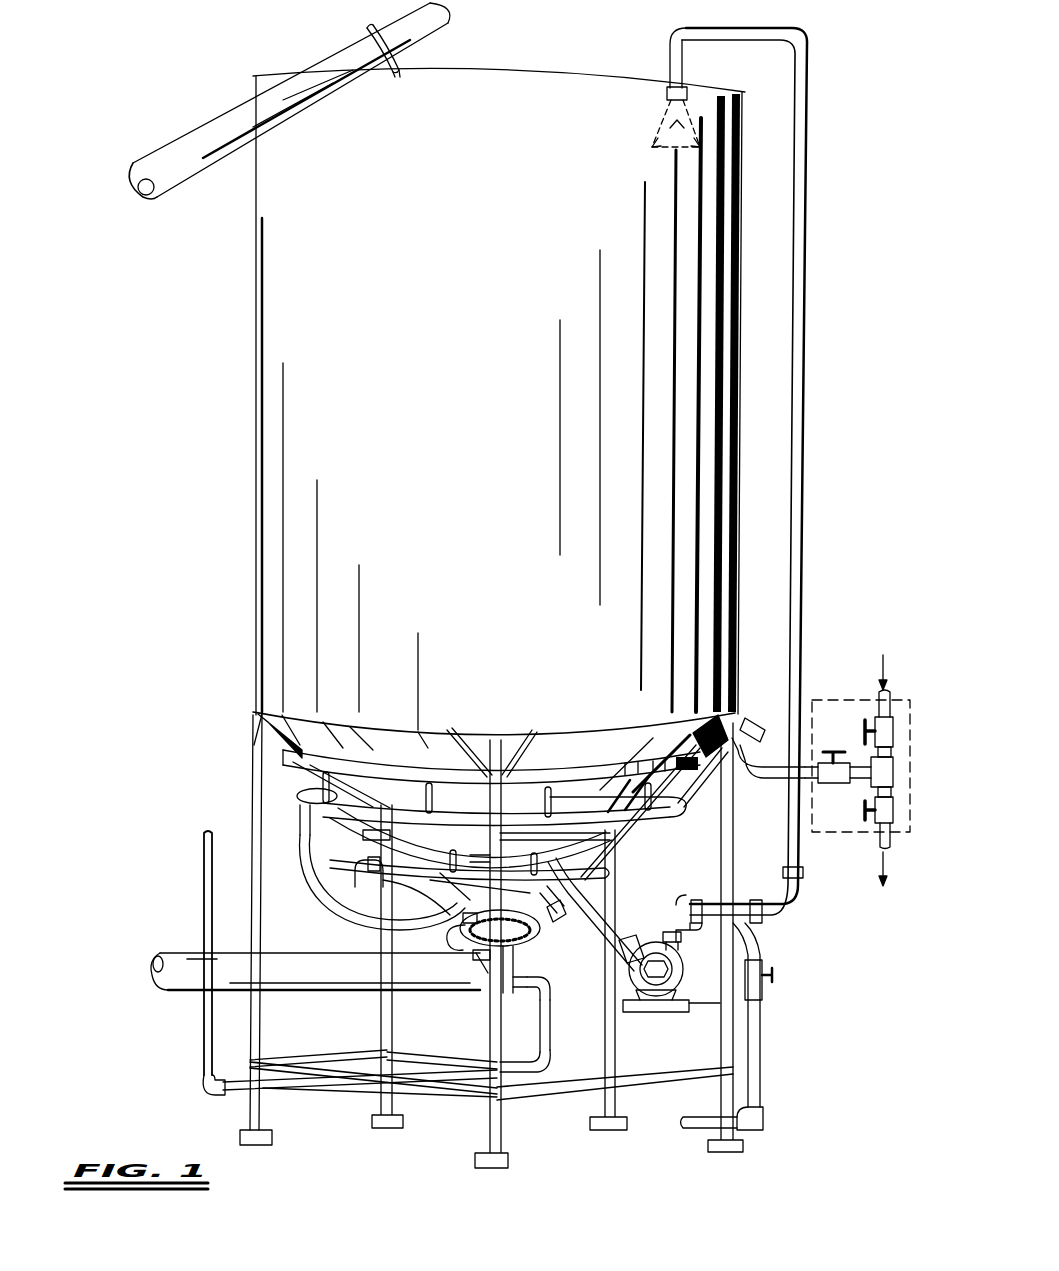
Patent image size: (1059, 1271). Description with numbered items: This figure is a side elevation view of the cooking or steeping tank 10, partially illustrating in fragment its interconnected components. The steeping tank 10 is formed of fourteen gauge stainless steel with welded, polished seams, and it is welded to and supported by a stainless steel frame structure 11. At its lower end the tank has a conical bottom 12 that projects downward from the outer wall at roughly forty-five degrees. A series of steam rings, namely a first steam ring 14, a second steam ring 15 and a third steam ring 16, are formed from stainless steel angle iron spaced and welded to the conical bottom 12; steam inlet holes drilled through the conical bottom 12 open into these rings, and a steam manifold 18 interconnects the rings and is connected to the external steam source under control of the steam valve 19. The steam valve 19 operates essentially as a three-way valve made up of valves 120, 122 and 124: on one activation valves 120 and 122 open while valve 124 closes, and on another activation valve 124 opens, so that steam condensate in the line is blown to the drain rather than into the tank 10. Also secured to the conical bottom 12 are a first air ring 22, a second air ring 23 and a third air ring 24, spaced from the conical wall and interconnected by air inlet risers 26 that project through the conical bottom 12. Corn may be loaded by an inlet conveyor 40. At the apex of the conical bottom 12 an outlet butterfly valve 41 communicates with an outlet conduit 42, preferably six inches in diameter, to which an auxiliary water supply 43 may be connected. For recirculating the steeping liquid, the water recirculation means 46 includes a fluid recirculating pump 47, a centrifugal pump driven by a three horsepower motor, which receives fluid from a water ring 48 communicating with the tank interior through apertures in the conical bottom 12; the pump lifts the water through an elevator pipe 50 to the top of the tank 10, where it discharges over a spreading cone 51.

The steeping tank 10 is at (232, 383).
The frame structure 11 is at (250, 780).
The conical bottom 12 is at (393, 803).
The first steam ring 14 is at (445, 892).
The second steam ring 15 is at (363, 833).
The third steam ring 16 is at (596, 770).
The steam manifold 18 is at (692, 791).
The steam valve 19 is at (866, 769).
The first air ring 22 is at (460, 937).
The second air ring 23 is at (607, 874).
The third air ring 24 is at (300, 800).
The air inlet risers 26 is at (548, 860).
The inlet conveyor 40 is at (318, 63).
The outlet butterfly valve 41 is at (518, 957).
The outlet conduit 42 is at (318, 953).
The auxiliary water supply 43 is at (552, 1030).
The water recirculation means 46 is at (674, 888).
The fluid recirculating pump 47 is at (688, 976).
The water ring 48 is at (473, 858).
The elevator pipe 50 is at (805, 345).
The spreading cone 51 is at (663, 135).
The valve 120 is at (892, 724).
The valve 122 is at (893, 820).
The valve 124 is at (836, 785).